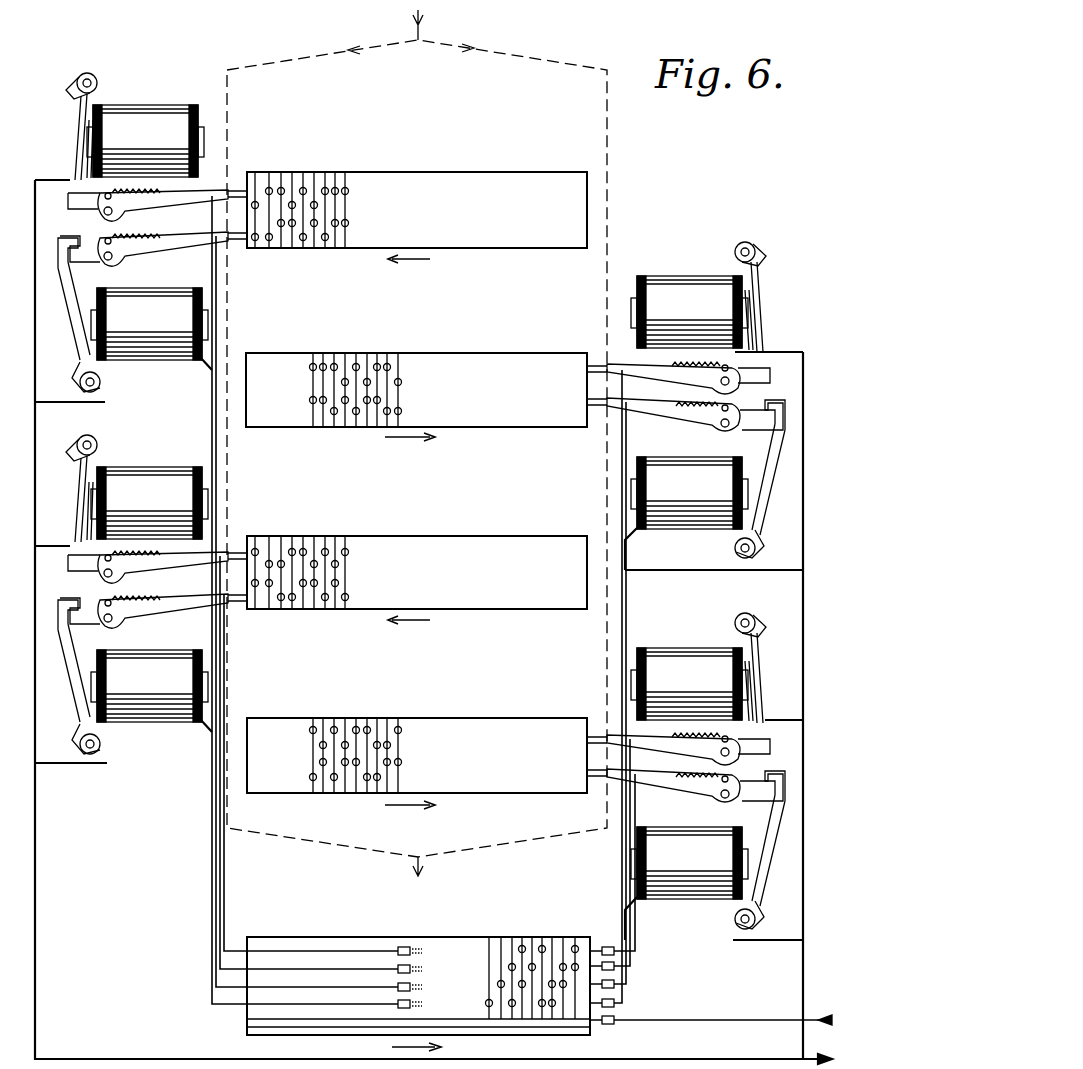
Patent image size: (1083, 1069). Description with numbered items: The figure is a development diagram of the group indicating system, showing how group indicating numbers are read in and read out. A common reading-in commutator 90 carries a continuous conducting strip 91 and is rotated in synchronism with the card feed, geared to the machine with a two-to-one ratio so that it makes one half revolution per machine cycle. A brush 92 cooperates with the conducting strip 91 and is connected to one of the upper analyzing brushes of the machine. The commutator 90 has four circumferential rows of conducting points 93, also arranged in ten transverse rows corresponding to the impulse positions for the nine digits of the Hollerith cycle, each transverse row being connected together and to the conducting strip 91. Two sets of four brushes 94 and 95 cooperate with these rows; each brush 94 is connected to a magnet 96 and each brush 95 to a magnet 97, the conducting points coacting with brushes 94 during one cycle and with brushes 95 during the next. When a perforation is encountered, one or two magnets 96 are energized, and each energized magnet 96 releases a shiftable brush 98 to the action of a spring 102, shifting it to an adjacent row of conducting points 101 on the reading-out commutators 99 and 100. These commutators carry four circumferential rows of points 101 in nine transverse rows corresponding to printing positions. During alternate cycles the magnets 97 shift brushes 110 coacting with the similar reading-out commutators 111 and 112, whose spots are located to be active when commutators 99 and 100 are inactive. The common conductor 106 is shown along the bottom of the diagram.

The reading-in commutator 90 is at (440, 935).
The conducting strip 91 is at (462, 1023).
The brush 92 is at (608, 1028).
The conducting points 93 is at (487, 1001).
The brushes 94 is at (419, 962).
The brushes 95 is at (618, 983).
The magnet 96 is at (150, 118).
The magnet 97 is at (686, 658).
The shiftable brush 98 is at (175, 205).
The reading-out commutator 99 is at (489, 178).
The reading-out commutator 100 is at (496, 545).
The conducting points 101 is at (349, 222).
The spring 102 is at (138, 201).
The common conductor 106 is at (150, 1062).
The brushes 110 is at (646, 370).
The reading-out commutator 111 is at (496, 357).
The reading-out commutator 112 is at (502, 725).